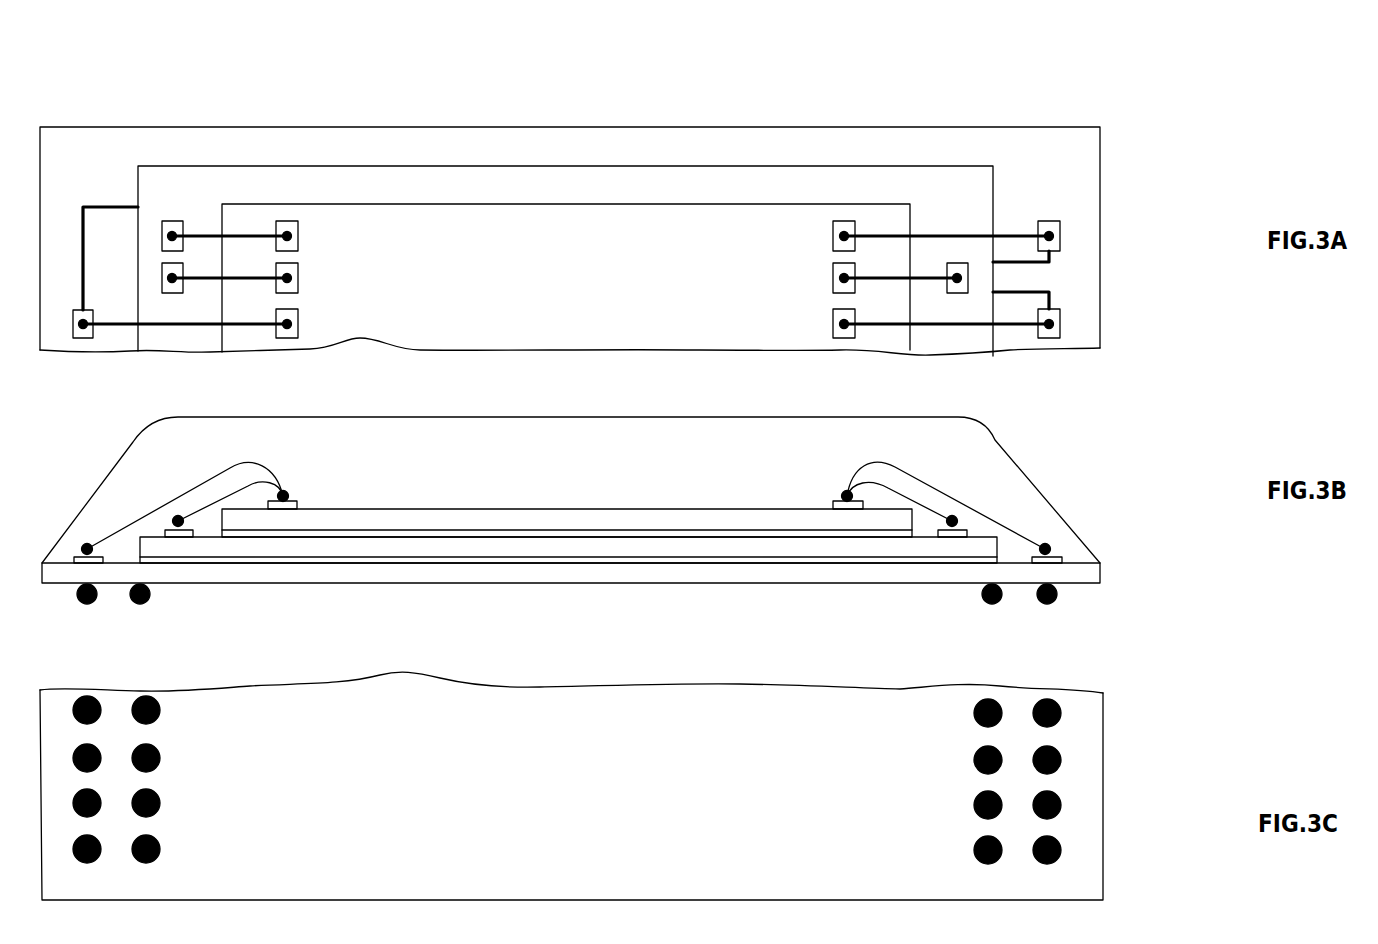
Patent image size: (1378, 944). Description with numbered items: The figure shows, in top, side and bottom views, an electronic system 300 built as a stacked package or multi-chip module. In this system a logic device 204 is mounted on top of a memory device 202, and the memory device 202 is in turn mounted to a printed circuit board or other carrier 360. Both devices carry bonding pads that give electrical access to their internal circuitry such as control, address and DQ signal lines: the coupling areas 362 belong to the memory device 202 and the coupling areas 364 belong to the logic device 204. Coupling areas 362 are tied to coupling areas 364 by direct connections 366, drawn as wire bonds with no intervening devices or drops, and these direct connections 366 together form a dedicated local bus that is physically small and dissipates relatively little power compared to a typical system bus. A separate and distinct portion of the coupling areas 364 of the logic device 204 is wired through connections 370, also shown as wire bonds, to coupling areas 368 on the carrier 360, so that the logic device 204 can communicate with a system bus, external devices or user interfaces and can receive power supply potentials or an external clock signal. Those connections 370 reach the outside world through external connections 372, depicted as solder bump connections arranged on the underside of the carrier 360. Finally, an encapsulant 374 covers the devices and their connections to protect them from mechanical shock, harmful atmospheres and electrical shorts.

In FIG. 3A, the electronic system 300 is at (1142, 89).
In FIG. 3B, the electronic system 300 is at (1078, 461).
In FIG. 3C, the electronic system 300 is at (1130, 669).
In FIG. 3A, the memory device 202 is at (532, 203).
In FIG. 3B, the memory device 202 is at (392, 548).
In FIG. 3A, the logic device 204 is at (572, 277).
In FIG. 3B, the logic device 204 is at (463, 520).
In FIG. 3A, the carrier 360 is at (598, 127).
In FIG. 3B, the carrier 360 is at (1077, 578).
In FIG. 3C, the carrier 360 is at (572, 795).
In FIG. 3A, the coupling areas of the memory device 362 is at (165, 272).
In FIG. 3B, the coupling areas of the memory device 362 is at (170, 530).
In FIG. 3A, the coupling areas of the logic device 364 is at (298, 240).
In FIG. 3B, the coupling areas of the logic device 364 is at (290, 500).
In FIG. 3A, the direct connections 366 is at (248, 240).
In FIG. 3B, the direct connections 366 is at (234, 488).
In FIG. 3A, the coupling areas of the carrier 368 is at (74, 340).
In FIG. 3B, the coupling areas of the carrier 368 is at (75, 556).
In FIG. 3A, the connections 370 is at (165, 345).
In FIG. 3B, the connections 370 is at (182, 497).
In FIG. 3B, the external connections 372 is at (92, 605).
In FIG. 3C, the external connections 372 is at (1064, 750).
In FIG. 3B, the encapsulant 374 is at (565, 464).